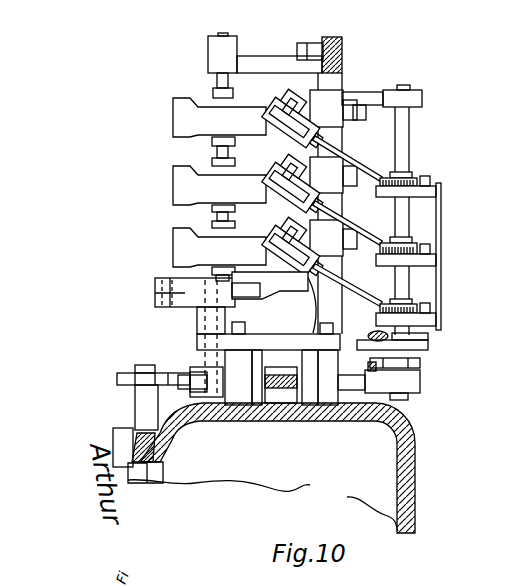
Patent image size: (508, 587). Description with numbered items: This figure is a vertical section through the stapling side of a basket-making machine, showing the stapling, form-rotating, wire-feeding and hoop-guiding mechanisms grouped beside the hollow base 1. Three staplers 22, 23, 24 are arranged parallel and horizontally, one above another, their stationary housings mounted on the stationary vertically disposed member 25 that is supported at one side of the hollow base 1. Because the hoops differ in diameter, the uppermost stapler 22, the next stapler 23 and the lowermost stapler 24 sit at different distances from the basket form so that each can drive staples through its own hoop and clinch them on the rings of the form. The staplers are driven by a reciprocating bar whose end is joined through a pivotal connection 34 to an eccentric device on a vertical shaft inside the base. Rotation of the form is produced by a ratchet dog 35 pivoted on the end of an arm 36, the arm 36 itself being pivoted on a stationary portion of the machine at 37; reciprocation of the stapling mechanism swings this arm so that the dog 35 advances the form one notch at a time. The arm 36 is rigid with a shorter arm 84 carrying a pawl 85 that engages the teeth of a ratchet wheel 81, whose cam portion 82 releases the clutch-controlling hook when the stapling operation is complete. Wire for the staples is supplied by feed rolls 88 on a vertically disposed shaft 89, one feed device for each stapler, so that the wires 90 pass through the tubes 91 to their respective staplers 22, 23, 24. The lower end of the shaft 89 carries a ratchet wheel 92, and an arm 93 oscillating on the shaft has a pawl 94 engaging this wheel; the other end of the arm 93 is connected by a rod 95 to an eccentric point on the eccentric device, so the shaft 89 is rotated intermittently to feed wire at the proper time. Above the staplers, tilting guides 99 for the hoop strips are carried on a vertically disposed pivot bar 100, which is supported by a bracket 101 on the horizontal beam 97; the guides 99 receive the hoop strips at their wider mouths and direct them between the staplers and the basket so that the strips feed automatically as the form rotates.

The hollow base 1 is at (410, 494).
The uppermost stapler 22 is at (282, 100).
The middle stapler 23 is at (282, 165).
The lowermost stapler 24 is at (282, 228).
The stationary vertically disposed member 25 is at (330, 310).
The pivotal connection 34 is at (285, 400).
The ratchet dog 35 is at (282, 292).
The arm 36 is at (185, 282).
The pivot 37 is at (185, 310).
The ratchet wheel 81 is at (118, 379).
The cam portion 82 is at (142, 367).
The shorter arm 84 is at (200, 370).
The ratchet pawl 85 is at (192, 378).
The feed rolls 88 is at (406, 174).
The vertically disposed shaft 89 is at (409, 131).
The wires 90 is at (441, 180).
The tubes 91 is at (368, 172).
The ratchet wheel 92 is at (420, 370).
The oscillating arm 93 is at (428, 352).
The ratchet pawl 94 is at (375, 372).
The rod 95 is at (428, 341).
The horizontal beam 97 is at (343, 53).
The tilting guides 99 is at (183, 112).
The vertically disposed pivot bar 100 is at (222, 85).
The bracket 101 is at (259, 67).